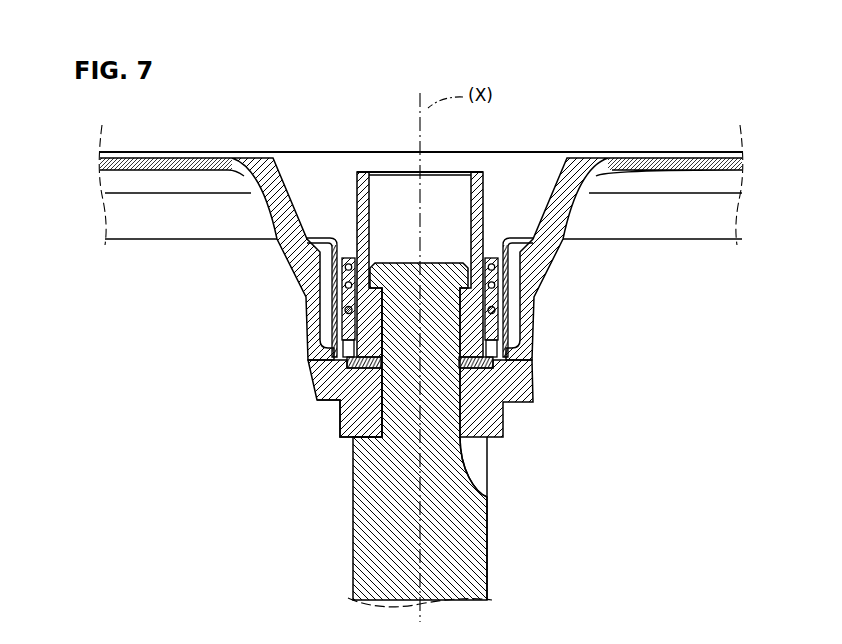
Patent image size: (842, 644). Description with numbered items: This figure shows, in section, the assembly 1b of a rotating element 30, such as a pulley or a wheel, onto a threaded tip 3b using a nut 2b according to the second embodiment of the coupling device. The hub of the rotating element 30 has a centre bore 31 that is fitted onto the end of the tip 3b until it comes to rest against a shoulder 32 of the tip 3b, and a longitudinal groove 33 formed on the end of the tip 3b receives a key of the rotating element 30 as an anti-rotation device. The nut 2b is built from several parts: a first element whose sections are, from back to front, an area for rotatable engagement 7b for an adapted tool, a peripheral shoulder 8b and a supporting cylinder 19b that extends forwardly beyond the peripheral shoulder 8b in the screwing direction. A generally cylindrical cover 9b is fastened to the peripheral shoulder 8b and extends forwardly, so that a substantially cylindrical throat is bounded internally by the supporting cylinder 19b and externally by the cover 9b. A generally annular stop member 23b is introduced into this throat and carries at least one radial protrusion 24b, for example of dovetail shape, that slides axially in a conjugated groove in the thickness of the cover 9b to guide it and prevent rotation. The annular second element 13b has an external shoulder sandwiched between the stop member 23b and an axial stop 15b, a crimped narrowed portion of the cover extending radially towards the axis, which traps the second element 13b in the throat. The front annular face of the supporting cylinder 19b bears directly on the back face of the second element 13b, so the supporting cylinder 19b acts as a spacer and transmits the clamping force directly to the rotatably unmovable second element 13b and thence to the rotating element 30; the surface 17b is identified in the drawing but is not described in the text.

The vehicle body panel assembly 1b is at (421, 149).
The nut 2b is at (501, 182).
The tip 3b is at (464, 435).
The area for rotatable engagement 7b is at (356, 198).
The peripheral shoulder 8b is at (337, 262).
The cover 9b is at (346, 290).
The second element 13b is at (467, 378).
The axial stop 15b is at (305, 417).
The guide surface 17b is at (491, 465).
The supporting cylinder 19b is at (494, 362).
The stop member 23b is at (502, 308).
The radial protrusion 24b is at (520, 286).
The rotating element 30 is at (662, 153).
The centre bore 31 is at (411, 408).
The shoulder 32 is at (340, 441).
The longitudinal groove 33 is at (485, 378).